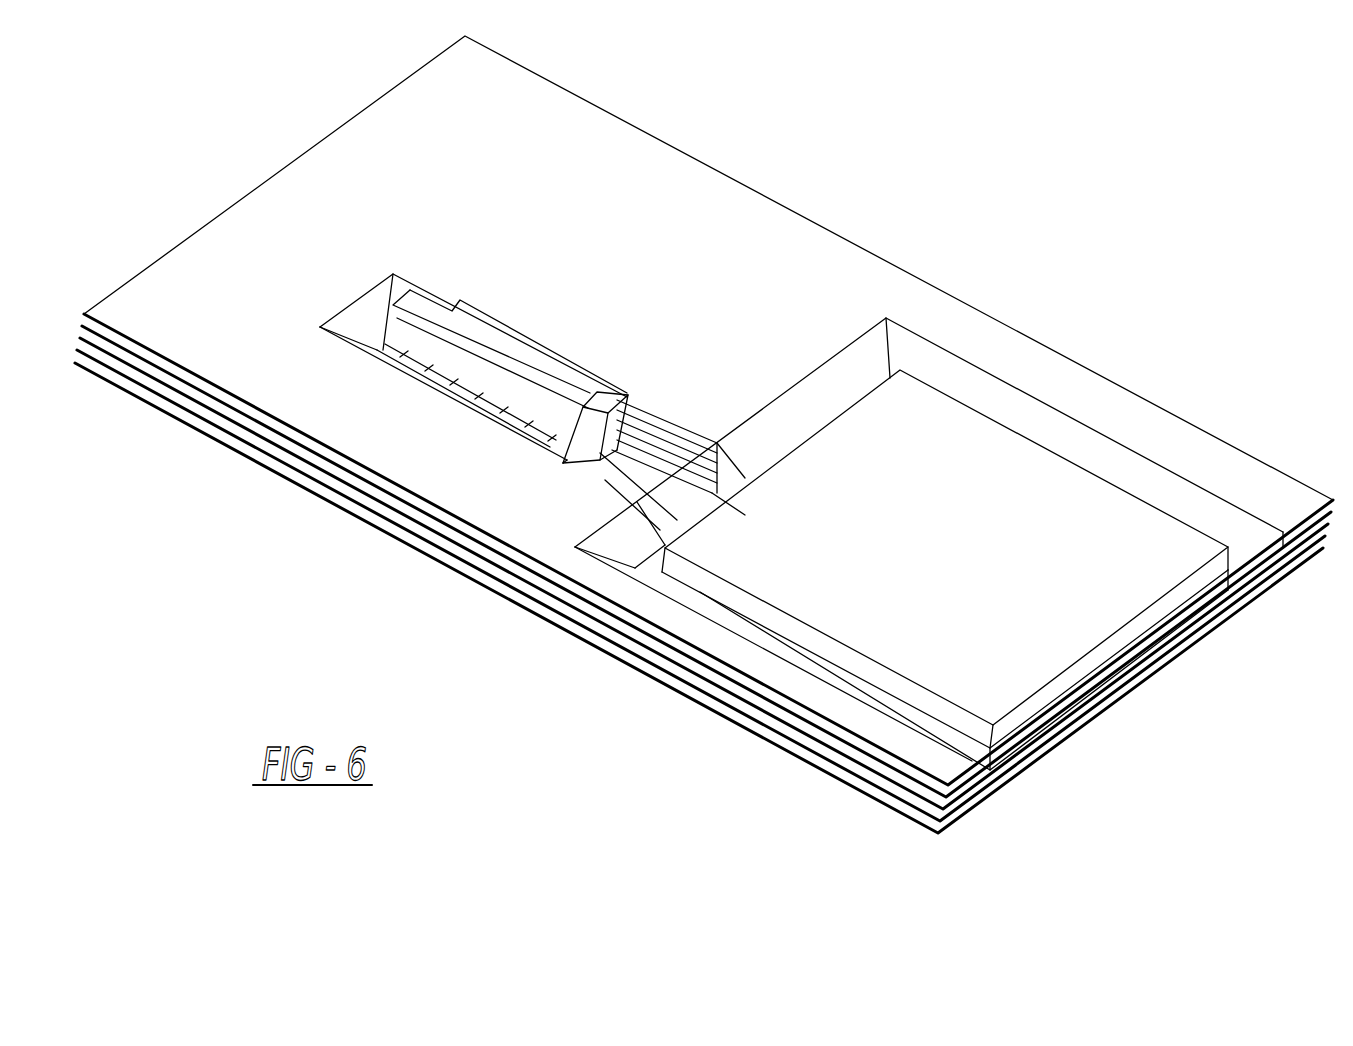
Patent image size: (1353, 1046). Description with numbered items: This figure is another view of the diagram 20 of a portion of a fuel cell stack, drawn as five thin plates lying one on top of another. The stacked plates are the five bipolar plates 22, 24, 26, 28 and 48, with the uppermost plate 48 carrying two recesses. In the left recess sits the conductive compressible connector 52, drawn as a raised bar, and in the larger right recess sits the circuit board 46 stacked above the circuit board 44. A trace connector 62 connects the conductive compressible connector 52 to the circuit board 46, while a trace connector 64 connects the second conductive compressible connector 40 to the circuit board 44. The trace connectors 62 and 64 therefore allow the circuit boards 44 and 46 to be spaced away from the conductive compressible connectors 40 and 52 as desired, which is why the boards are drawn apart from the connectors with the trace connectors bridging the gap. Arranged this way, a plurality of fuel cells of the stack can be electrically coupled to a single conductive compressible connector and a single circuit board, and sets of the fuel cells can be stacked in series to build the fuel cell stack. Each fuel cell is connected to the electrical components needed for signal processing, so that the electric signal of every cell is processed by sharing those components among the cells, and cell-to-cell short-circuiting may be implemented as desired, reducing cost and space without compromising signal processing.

The diagram 20 is at (1095, 135).
The bipolar plate 22 is at (770, 747).
The bipolar plate 24 is at (720, 700).
The bipolar plate 26 is at (660, 657).
The bipolar plate 28 is at (590, 600).
The conductive compressible connector 40 is at (607, 470).
The circuit board 44 is at (1090, 708).
The circuit board 46 is at (1165, 605).
The bipolar plate 48 is at (520, 553).
The conductive compressible connector 52 is at (490, 348).
The trace connector 62 is at (633, 470).
The trace connector 64 is at (860, 378).